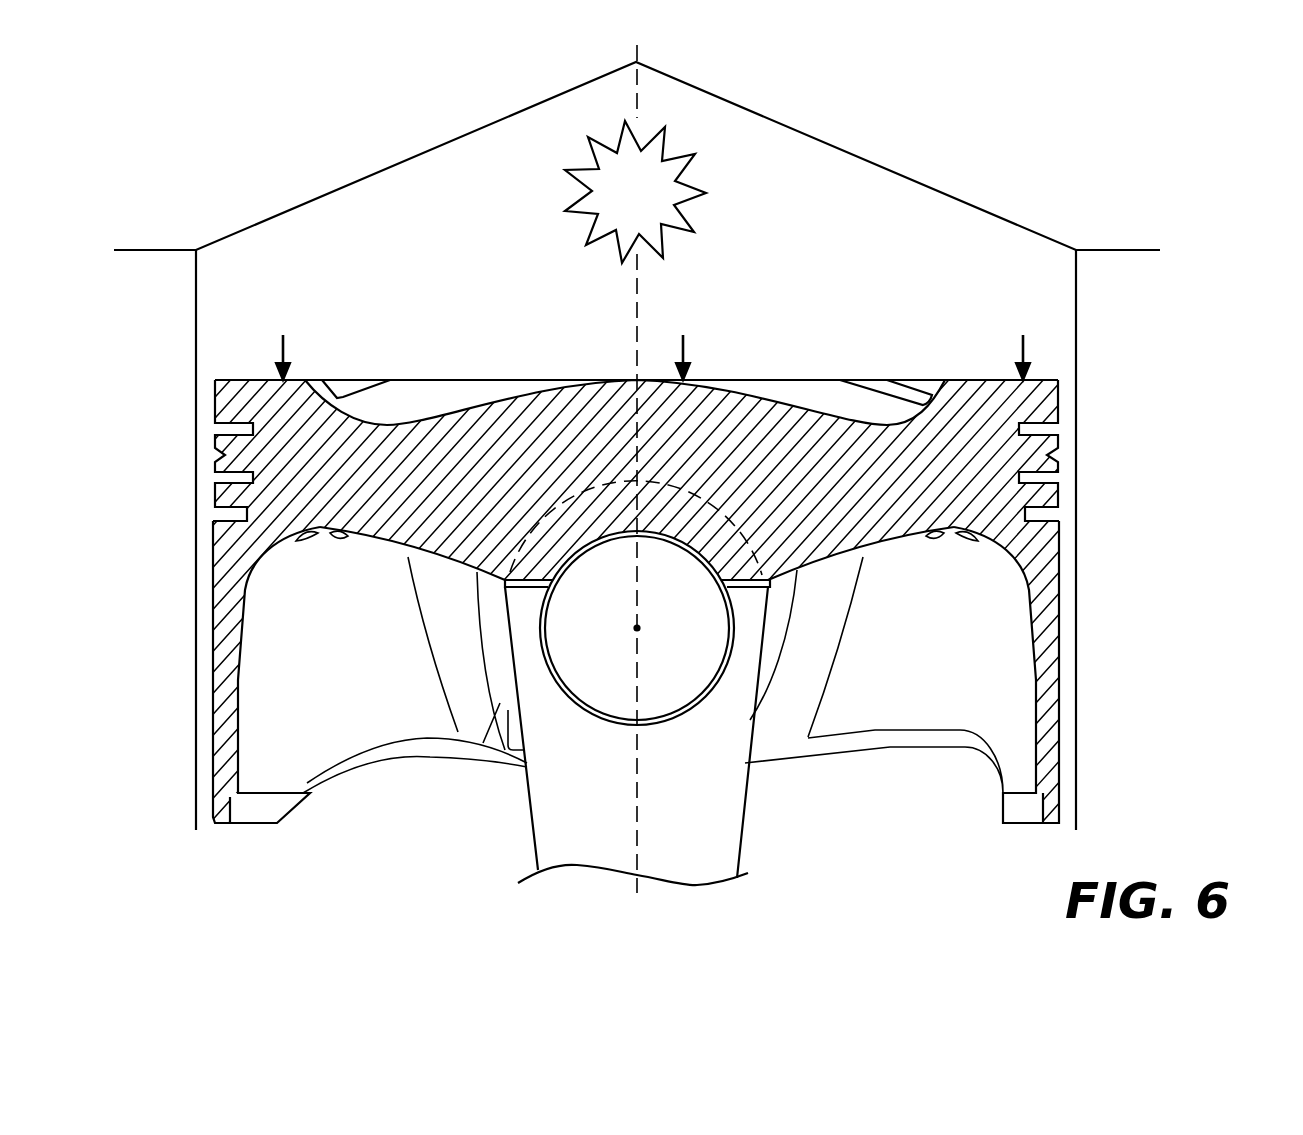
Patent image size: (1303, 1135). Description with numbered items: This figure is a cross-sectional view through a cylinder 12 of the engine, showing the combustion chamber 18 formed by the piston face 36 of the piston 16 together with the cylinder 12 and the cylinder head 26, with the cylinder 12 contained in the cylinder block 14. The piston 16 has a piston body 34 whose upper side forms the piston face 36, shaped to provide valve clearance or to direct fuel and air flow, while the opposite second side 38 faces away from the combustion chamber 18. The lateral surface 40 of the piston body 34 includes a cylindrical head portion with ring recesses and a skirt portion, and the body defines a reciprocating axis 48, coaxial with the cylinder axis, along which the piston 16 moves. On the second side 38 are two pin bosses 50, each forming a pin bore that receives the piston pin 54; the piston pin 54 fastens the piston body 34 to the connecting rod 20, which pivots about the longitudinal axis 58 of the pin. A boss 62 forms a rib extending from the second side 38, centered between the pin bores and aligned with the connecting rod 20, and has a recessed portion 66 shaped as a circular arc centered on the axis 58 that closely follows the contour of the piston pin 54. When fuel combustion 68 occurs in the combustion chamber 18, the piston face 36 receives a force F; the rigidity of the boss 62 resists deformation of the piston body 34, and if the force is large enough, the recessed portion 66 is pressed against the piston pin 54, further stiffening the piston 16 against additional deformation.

The cylinder 12 is at (1076, 325).
The cylinder block 14 is at (1154, 437).
The piston 16 is at (180, 507).
The combustion chamber 18 is at (326, 280).
The connecting rod 20 is at (530, 799).
The cylinder head 26 is at (989, 165).
The piston body 34 is at (409, 488).
The piston face 36 is at (510, 380).
The second side 38 is at (325, 541).
The lateral surface 40 is at (214, 588).
The reciprocating axis 48 is at (637, 45).
The pin boss 50 is at (500, 654).
The piston pin 54 is at (672, 697).
The longitudinal axis 58 is at (635, 628).
The boss 62 is at (450, 564).
The recessed portion 66 is at (687, 540).
The fuel combustion 68 is at (651, 205).